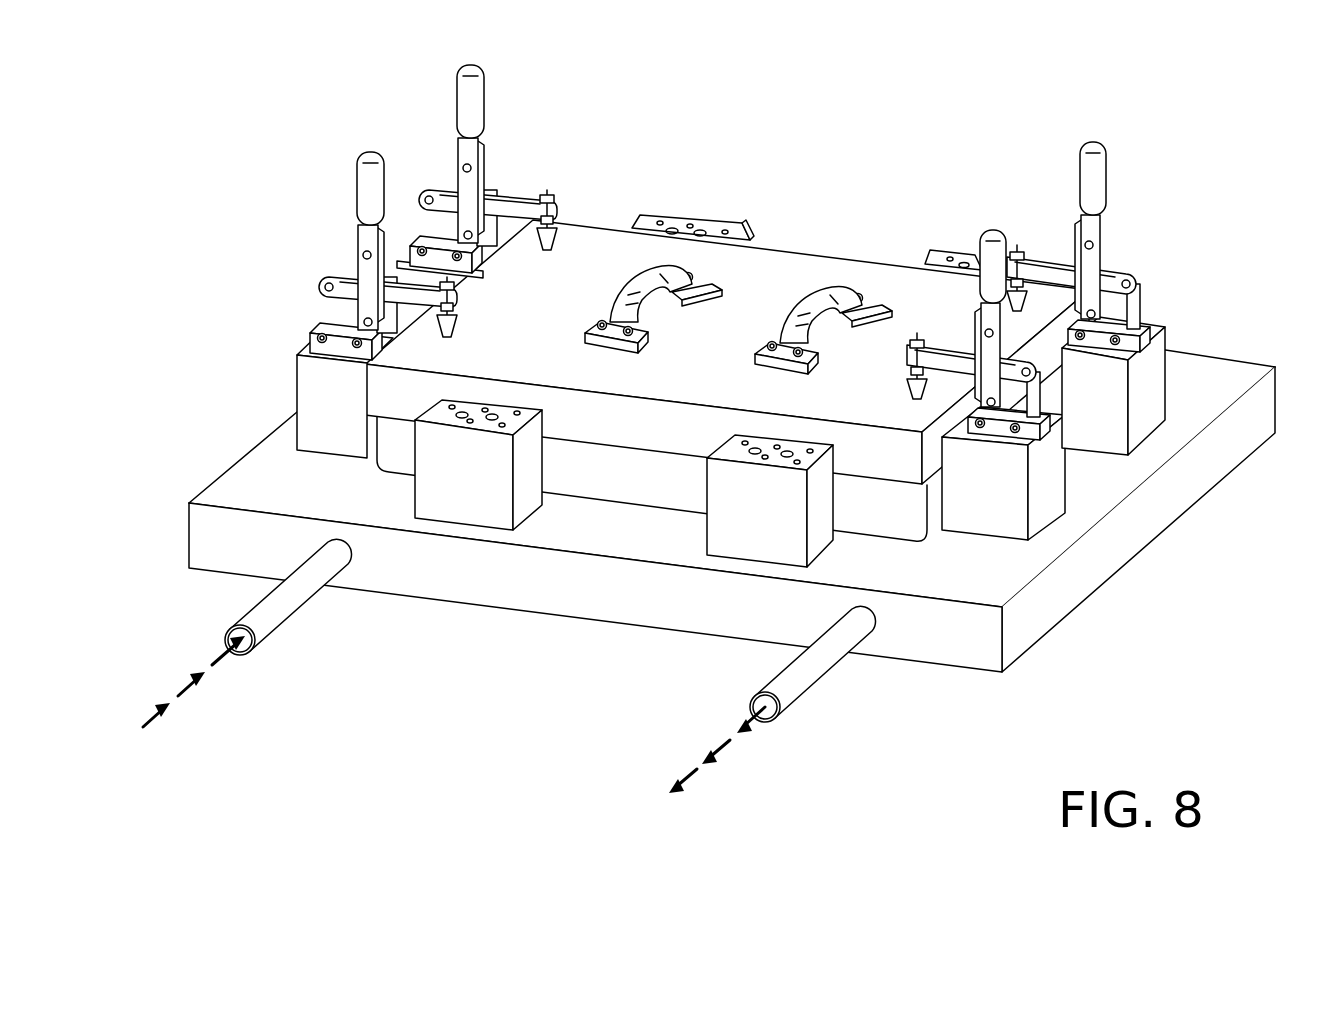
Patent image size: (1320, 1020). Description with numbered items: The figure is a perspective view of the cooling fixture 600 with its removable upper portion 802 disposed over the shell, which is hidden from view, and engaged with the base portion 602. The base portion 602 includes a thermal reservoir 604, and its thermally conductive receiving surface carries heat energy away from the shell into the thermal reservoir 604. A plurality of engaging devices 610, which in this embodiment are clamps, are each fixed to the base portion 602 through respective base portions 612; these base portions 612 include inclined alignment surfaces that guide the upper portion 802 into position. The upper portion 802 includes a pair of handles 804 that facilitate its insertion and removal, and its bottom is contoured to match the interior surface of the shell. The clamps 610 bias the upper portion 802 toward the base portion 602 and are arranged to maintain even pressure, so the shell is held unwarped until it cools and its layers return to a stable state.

The cooling fixture 600 is at (456, 642).
The base portion 602 is at (251, 480).
The thermal reservoir 604 is at (590, 604).
The engaging devices 610 is at (336, 278).
The base portions 612 is at (425, 503).
The upper portion 802 is at (770, 268).
The handles 804 is at (800, 304).